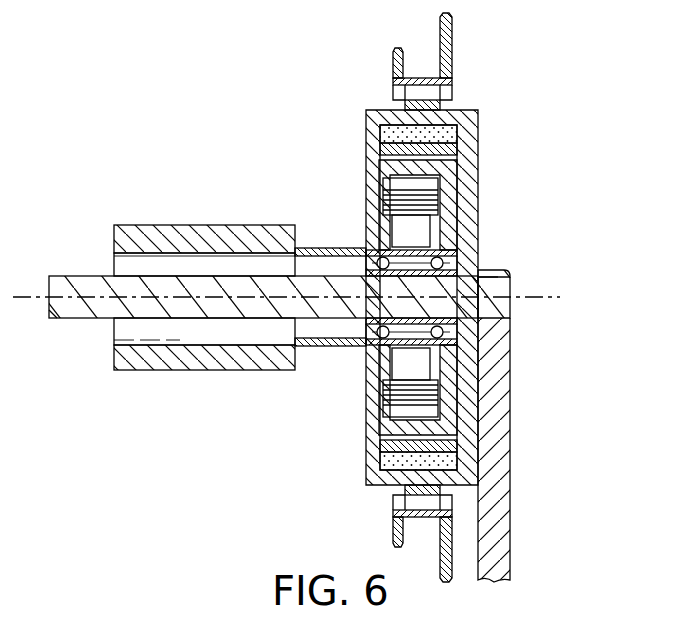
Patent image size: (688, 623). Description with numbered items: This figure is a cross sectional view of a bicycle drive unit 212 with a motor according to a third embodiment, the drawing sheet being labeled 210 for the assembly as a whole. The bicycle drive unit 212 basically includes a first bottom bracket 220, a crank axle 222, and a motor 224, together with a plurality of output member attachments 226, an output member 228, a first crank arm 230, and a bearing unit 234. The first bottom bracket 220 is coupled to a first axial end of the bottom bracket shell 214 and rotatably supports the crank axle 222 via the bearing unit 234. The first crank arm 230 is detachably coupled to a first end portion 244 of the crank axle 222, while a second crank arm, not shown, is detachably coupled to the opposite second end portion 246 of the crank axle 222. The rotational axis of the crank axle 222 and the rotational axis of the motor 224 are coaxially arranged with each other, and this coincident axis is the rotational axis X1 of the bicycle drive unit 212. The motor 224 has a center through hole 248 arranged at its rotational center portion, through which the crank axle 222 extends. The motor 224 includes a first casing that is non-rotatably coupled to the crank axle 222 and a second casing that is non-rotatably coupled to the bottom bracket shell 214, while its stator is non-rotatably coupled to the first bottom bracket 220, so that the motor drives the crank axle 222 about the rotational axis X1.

The rotary actuator assembly 210 is at (286, 255).
The bicycle drive unit 212 is at (569, 136).
The bottom bracket shell 214 is at (237, 223).
The first bottom bracket 220 is at (312, 348).
The crank axle 222 is at (76, 322).
The motor 224 is at (331, 127).
The output member attachments 226 is at (424, 67).
The output member 228 is at (417, 295).
The first crank arm 230 is at (513, 510).
The bearing unit 234 is at (354, 264).
The first end portion 244 is at (497, 283).
The second end portion 246 is at (80, 288).
The center through hole 248 is at (463, 309).
The rotational axis X1 is at (537, 300).